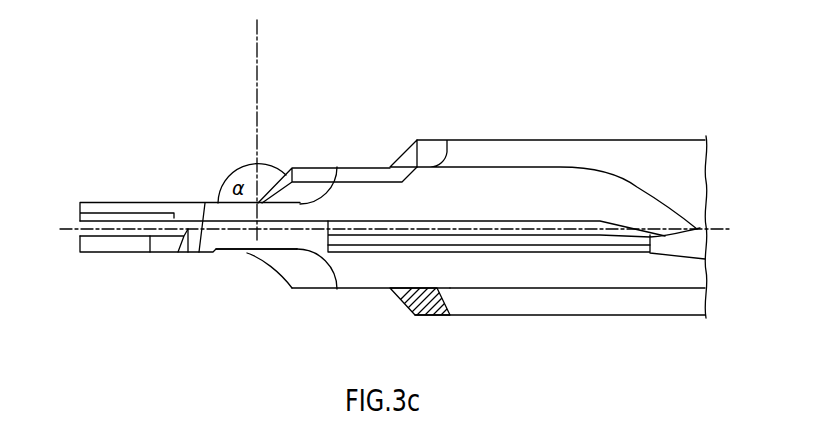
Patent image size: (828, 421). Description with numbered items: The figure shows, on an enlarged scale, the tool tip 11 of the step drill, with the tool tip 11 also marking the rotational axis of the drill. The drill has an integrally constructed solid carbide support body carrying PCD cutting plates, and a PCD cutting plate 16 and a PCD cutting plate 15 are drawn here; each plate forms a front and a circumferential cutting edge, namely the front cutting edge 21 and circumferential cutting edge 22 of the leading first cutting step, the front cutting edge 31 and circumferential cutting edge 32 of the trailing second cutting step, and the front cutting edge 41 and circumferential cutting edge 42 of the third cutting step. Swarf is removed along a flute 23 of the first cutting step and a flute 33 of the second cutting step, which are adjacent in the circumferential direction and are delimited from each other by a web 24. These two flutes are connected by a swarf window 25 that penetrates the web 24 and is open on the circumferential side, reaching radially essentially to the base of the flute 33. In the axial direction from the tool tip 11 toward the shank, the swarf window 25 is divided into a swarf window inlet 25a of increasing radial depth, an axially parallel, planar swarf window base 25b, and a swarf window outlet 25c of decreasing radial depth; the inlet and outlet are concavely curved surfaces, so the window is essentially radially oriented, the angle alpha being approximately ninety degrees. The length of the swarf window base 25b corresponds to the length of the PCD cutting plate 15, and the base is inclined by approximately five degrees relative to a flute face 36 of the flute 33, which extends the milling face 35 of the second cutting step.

The tool tip 11 is at (70, 227).
The front cutting edge 21 is at (79, 240).
The circumferential cutting edge 22 is at (117, 242).
The PCD cutting plate 16 is at (145, 237).
The swarf window 25 is at (207, 262).
The swarf window inlet 25a is at (191, 240).
The swarf window base 25b is at (270, 234).
The swarf window outlet 25c is at (326, 249).
The front cutting edge 41 is at (404, 153).
The circumferential cutting edge 42 is at (436, 139).
The flute 23 is at (428, 212).
The web 24 is at (362, 243).
The PCD cutting plate 15 is at (290, 255).
The front cutting edge 31 is at (279, 278).
The circumferential cutting edge 32 is at (315, 290).
The milling face 35 is at (318, 270).
The flute 33 is at (498, 278).
The flute face 36 is at (551, 264).